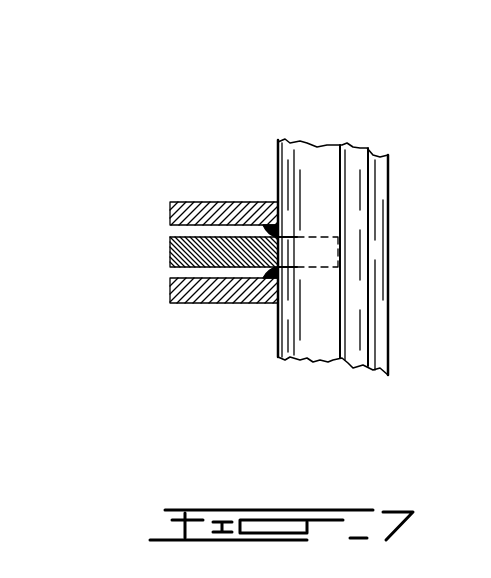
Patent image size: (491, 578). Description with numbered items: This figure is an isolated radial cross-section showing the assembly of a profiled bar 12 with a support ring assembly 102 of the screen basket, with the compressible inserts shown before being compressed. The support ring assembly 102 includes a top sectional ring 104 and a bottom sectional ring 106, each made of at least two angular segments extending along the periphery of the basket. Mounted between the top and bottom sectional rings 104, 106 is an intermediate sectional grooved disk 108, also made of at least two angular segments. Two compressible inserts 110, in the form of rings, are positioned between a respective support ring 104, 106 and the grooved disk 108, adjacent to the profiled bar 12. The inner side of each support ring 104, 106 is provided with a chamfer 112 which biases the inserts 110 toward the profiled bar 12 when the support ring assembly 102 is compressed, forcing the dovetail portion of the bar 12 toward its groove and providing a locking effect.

The profiled bar 12 is at (323, 163).
The support ring assembly 102 is at (208, 202).
The top sectional ring 104 is at (170, 212).
The bottom sectional ring 106 is at (197, 303).
The intermediate sectional grooved disk 108 is at (170, 253).
The compressible insert 110 is at (280, 224).
The chamfer 112 is at (281, 217).